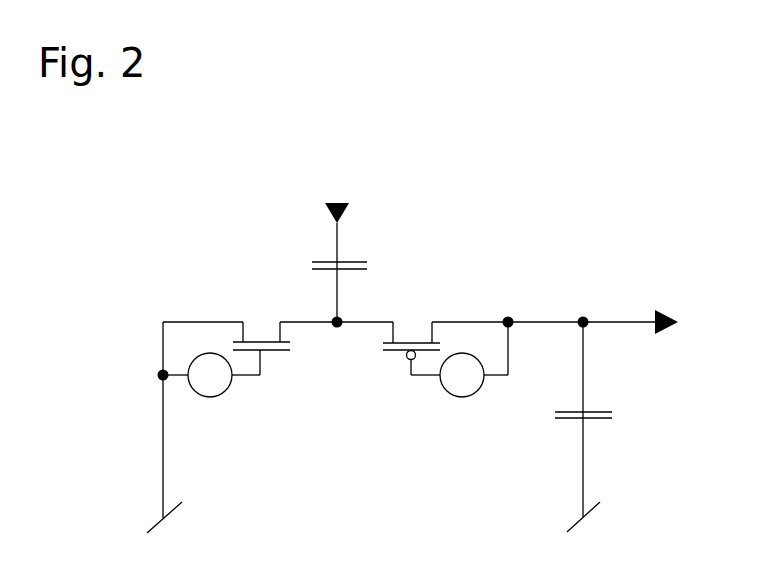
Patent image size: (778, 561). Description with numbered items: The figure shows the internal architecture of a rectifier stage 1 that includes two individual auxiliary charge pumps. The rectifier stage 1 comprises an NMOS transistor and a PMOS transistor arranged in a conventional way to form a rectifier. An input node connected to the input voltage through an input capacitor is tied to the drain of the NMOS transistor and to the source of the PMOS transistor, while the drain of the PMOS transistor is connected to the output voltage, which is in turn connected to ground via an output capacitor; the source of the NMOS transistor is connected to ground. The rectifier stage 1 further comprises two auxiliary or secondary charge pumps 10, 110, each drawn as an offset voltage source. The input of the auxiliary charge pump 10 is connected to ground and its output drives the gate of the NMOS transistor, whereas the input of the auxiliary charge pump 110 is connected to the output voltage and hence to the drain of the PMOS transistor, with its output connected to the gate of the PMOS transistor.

The rectifier stage 1 is at (431, 222).
The auxiliary charge pump 10 is at (205, 340).
The auxiliary charge pump 110 is at (467, 340).